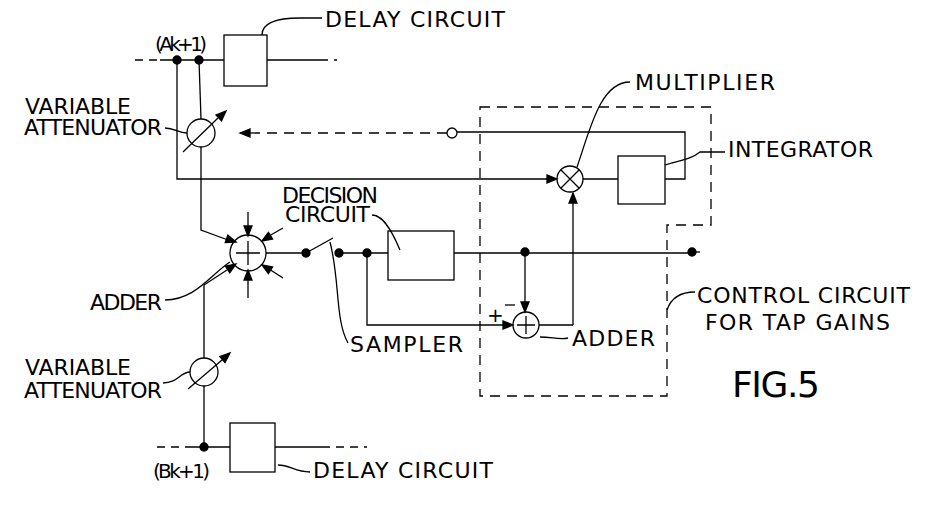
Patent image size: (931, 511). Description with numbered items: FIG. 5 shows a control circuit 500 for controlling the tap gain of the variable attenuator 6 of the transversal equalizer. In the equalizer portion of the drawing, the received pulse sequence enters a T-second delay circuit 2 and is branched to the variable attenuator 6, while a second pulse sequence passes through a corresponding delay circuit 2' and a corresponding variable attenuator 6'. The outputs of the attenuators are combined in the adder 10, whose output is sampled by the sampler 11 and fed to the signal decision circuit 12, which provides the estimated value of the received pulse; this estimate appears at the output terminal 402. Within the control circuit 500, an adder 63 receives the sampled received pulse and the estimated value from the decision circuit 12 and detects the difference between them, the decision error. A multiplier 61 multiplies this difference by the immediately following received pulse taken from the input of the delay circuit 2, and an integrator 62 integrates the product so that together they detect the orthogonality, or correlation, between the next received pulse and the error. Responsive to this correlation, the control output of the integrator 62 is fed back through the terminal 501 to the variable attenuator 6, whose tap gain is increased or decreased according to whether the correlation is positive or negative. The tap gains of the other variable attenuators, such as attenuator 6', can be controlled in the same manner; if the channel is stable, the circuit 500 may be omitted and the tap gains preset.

The T-second delay circuit 2 is at (261, 56).
The T-second delay circuit 2' is at (271, 434).
The variable attenuator 6 is at (219, 177).
The variable attenuator 6' is at (229, 326).
The adder 10 is at (228, 250).
The sampler 11 is at (312, 258).
The signal decision circuit 12 is at (418, 231).
The multiplier 61 is at (560, 190).
The integrator 62 is at (632, 205).
The adder 63 is at (525, 338).
The output signal ck 402 is at (700, 252).
The control circuit 500 is at (597, 397).
The control signal terminal 501 is at (449, 128).